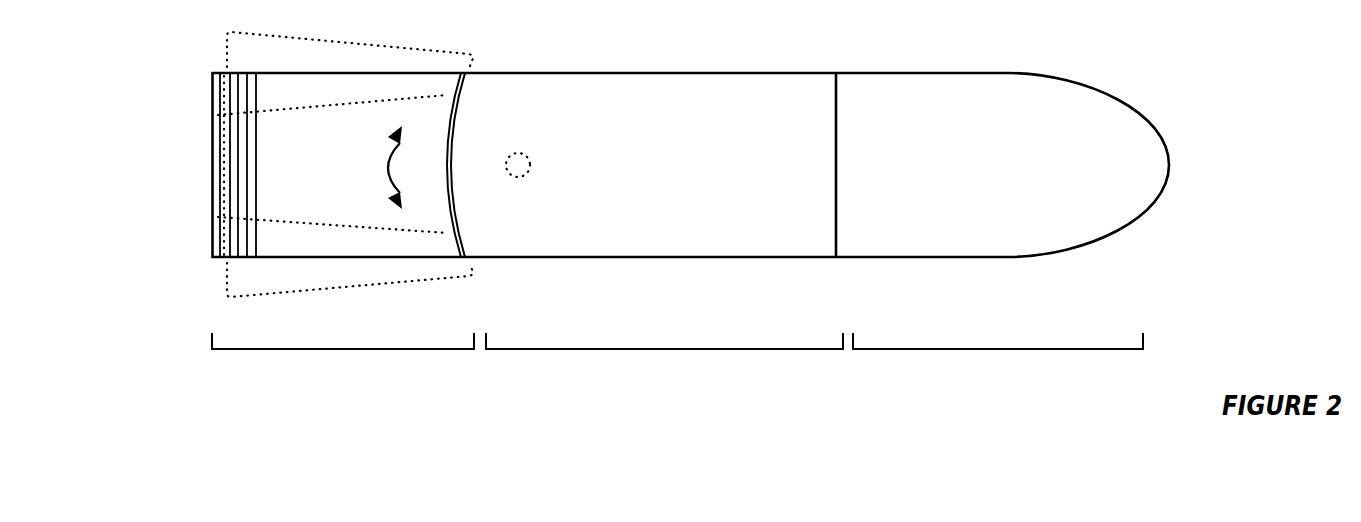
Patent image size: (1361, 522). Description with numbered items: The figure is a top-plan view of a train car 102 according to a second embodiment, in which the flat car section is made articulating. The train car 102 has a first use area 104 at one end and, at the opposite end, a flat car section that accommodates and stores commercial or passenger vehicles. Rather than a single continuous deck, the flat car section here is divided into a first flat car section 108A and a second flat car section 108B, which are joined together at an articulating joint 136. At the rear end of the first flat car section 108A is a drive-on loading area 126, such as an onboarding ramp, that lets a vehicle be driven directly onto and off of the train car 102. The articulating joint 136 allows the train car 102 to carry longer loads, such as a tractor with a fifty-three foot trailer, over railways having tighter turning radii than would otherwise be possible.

The train car 102 is at (1016, 58).
The first use area 104 is at (983, 349).
The first flat car section 108A is at (325, 350).
The second flat car section 108B is at (668, 350).
The drive-on loading area 126 is at (232, 172).
The articulating joint 136 is at (532, 160).